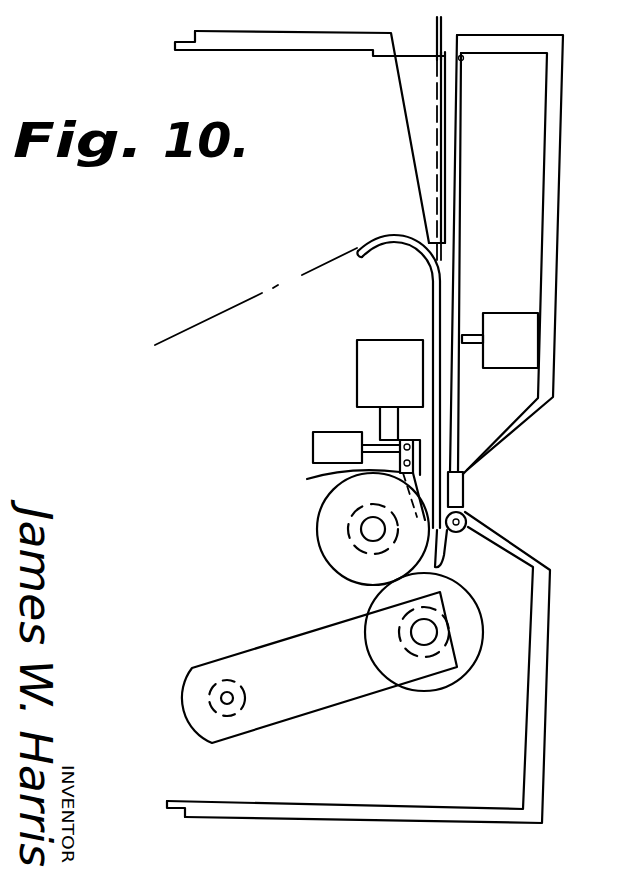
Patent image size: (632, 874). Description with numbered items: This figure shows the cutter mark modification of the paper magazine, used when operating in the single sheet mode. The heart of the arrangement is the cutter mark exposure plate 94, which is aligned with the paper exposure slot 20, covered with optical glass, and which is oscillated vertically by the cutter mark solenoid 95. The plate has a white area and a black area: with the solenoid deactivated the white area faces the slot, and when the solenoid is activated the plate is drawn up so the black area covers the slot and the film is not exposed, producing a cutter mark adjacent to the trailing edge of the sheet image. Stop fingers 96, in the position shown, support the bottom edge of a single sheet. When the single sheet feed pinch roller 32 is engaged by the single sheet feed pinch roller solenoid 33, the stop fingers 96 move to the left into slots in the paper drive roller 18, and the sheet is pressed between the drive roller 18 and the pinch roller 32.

The paper drive roller 18 is at (328, 556).
The paper exposure slot 20 is at (463, 490).
The single sheet feed pinch roller 32 is at (466, 519).
The single sheet feed pinch roller solenoid 33 is at (500, 340).
The cutter mark exposure plate 94 is at (307, 479).
The cutter mark solenoid 95 is at (390, 390).
The stop fingers 96 is at (447, 548).